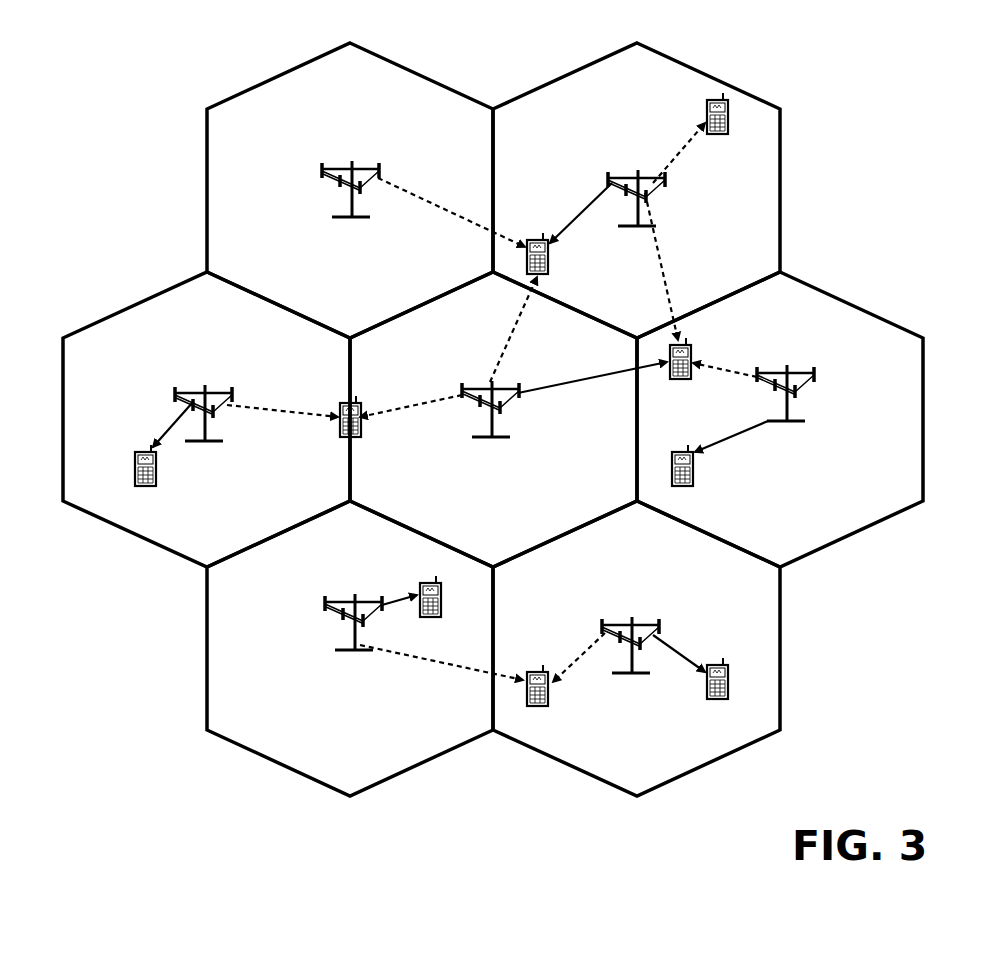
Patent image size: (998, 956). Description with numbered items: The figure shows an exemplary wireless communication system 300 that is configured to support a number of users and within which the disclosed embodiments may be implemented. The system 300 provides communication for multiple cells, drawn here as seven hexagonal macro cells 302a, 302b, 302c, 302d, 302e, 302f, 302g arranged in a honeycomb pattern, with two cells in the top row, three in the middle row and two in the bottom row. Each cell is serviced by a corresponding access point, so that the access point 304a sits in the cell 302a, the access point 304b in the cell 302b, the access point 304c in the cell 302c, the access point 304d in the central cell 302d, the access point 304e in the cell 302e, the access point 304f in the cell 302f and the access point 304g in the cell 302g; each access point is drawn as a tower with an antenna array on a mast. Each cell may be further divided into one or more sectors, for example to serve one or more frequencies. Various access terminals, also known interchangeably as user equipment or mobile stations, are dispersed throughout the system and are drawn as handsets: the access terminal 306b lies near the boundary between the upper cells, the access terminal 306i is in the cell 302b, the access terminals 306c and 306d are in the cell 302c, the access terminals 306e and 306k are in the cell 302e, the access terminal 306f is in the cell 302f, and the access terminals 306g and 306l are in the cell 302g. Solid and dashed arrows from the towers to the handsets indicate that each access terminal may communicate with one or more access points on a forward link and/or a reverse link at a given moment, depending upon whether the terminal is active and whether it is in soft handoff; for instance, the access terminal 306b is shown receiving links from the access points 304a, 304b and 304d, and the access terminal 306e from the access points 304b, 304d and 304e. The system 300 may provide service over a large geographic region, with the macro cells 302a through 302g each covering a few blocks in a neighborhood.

The wireless communication system 300 is at (895, 218).
The macro cell 302a is at (280, 75).
The macro cell 302b is at (697, 71).
The macro cell 302c is at (135, 305).
The macro cell 302d is at (520, 308).
The macro cell 302e is at (842, 301).
The macro cell 302f is at (205, 655).
The macro cell 302g is at (782, 655).
The access point 304a is at (322, 170).
The access point 304b is at (608, 176).
The access point 304c is at (176, 392).
The access point 304d is at (462, 388).
The access point 304e is at (815, 374).
The access point 304f is at (325, 602).
The access point 304g is at (602, 625).
The access terminal 306b is at (529, 240).
The access terminal 306c is at (135, 466).
The access terminal 306d is at (340, 411).
The access terminal 306e is at (692, 361).
The access terminal 306f is at (424, 584).
The access terminal 306g is at (530, 673).
The access terminal 306i is at (707, 104).
The access terminal 306k is at (675, 453).
The access terminal 306l is at (708, 666).